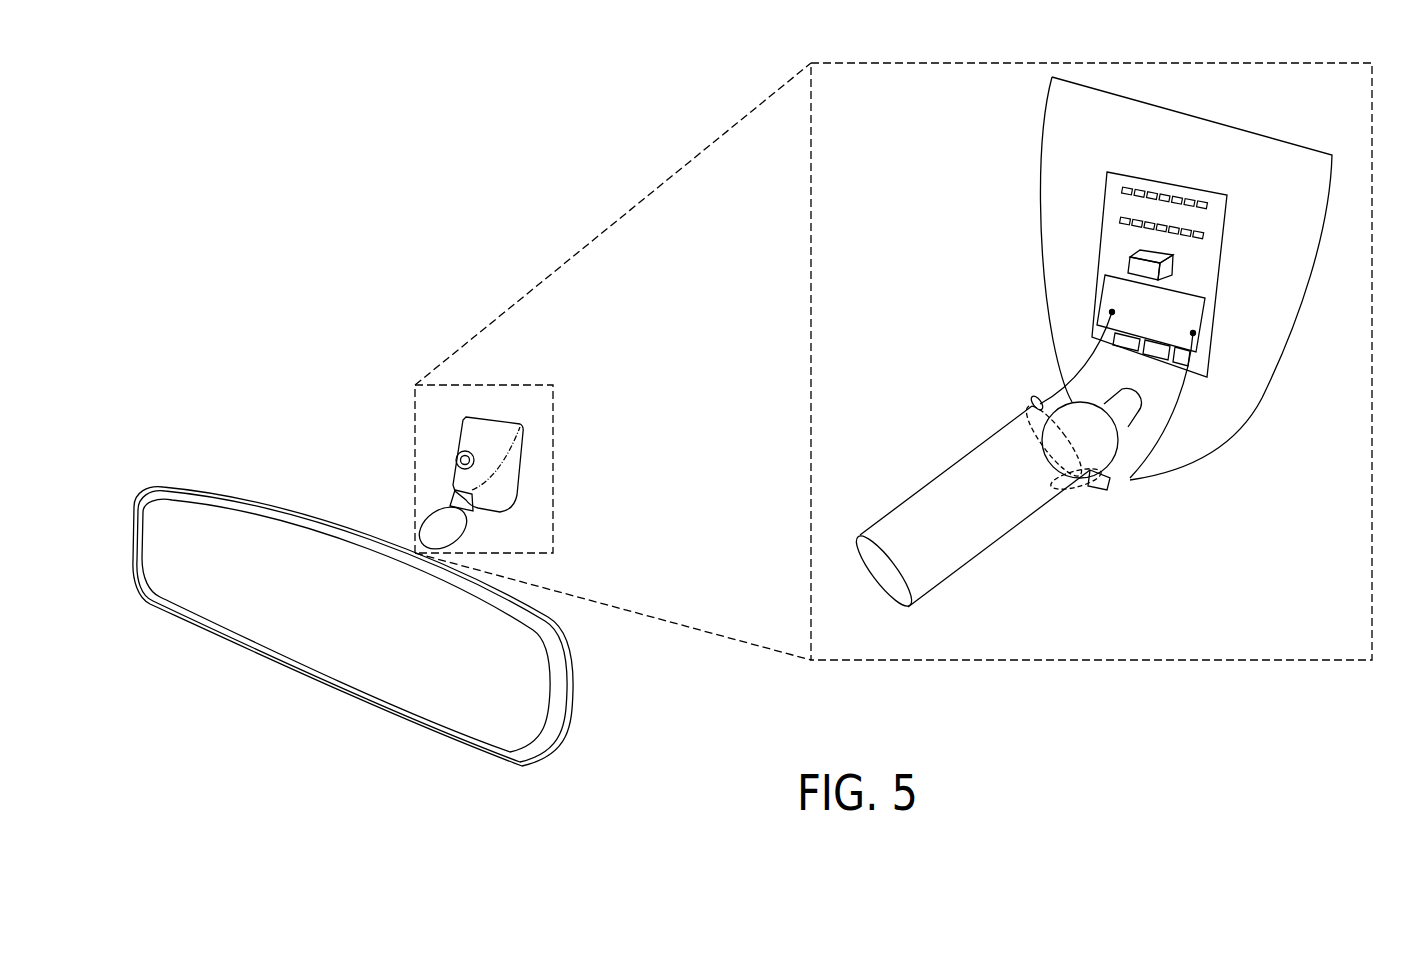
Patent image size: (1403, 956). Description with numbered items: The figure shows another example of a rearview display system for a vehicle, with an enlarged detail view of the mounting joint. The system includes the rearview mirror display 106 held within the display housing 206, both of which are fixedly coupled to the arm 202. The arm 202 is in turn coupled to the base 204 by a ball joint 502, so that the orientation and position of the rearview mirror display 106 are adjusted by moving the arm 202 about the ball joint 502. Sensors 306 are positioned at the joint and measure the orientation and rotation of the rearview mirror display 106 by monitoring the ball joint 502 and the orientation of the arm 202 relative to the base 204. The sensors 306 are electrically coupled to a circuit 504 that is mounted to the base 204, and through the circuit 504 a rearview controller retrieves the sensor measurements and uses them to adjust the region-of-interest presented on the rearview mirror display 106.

The rearview mirror display 106 is at (418, 685).
The arm 202 is at (403, 527).
The base 204 is at (492, 430).
The display housing 206 is at (172, 487).
The sensors 306 is at (1036, 410).
The ball joint 502 is at (1116, 497).
The circuit 504 is at (1118, 247).